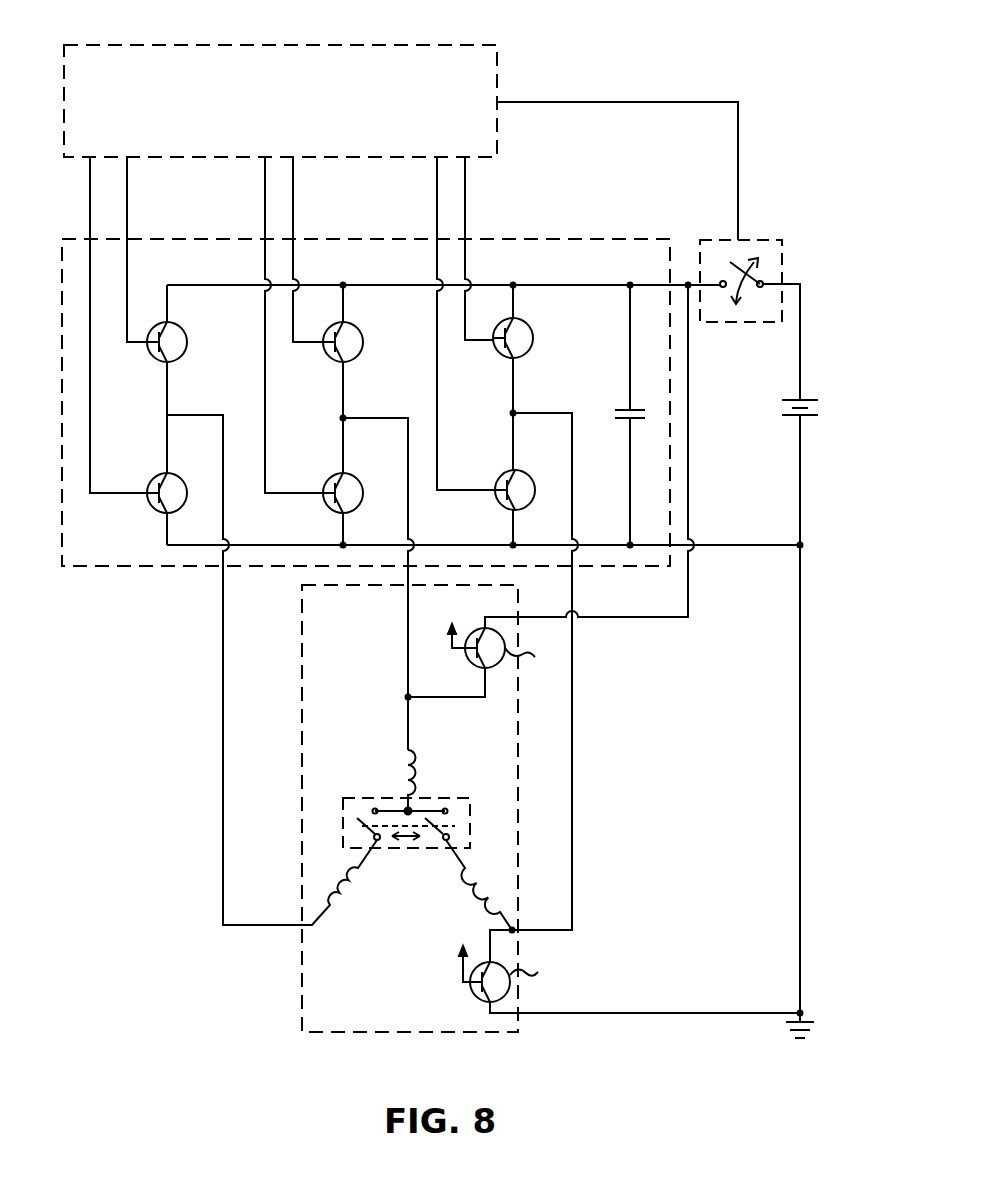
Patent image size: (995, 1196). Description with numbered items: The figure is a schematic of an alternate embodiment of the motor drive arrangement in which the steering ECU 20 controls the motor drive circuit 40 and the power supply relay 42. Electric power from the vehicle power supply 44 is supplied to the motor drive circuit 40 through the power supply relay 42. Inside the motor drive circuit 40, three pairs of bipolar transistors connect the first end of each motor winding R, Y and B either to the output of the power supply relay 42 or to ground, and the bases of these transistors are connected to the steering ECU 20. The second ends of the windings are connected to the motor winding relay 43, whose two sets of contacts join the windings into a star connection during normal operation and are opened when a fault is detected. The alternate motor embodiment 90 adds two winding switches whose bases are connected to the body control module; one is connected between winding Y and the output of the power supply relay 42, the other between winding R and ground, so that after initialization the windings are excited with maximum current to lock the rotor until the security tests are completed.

The steering ECU 20 is at (478, 45).
The motor drive circuit 40 is at (562, 240).
The power supply relay 42 is at (760, 240).
The vehicle power supply 44 is at (780, 424).
The alternate embodiment of the motor 90 is at (518, 748).
The motor winding relay 43 is at (470, 820).